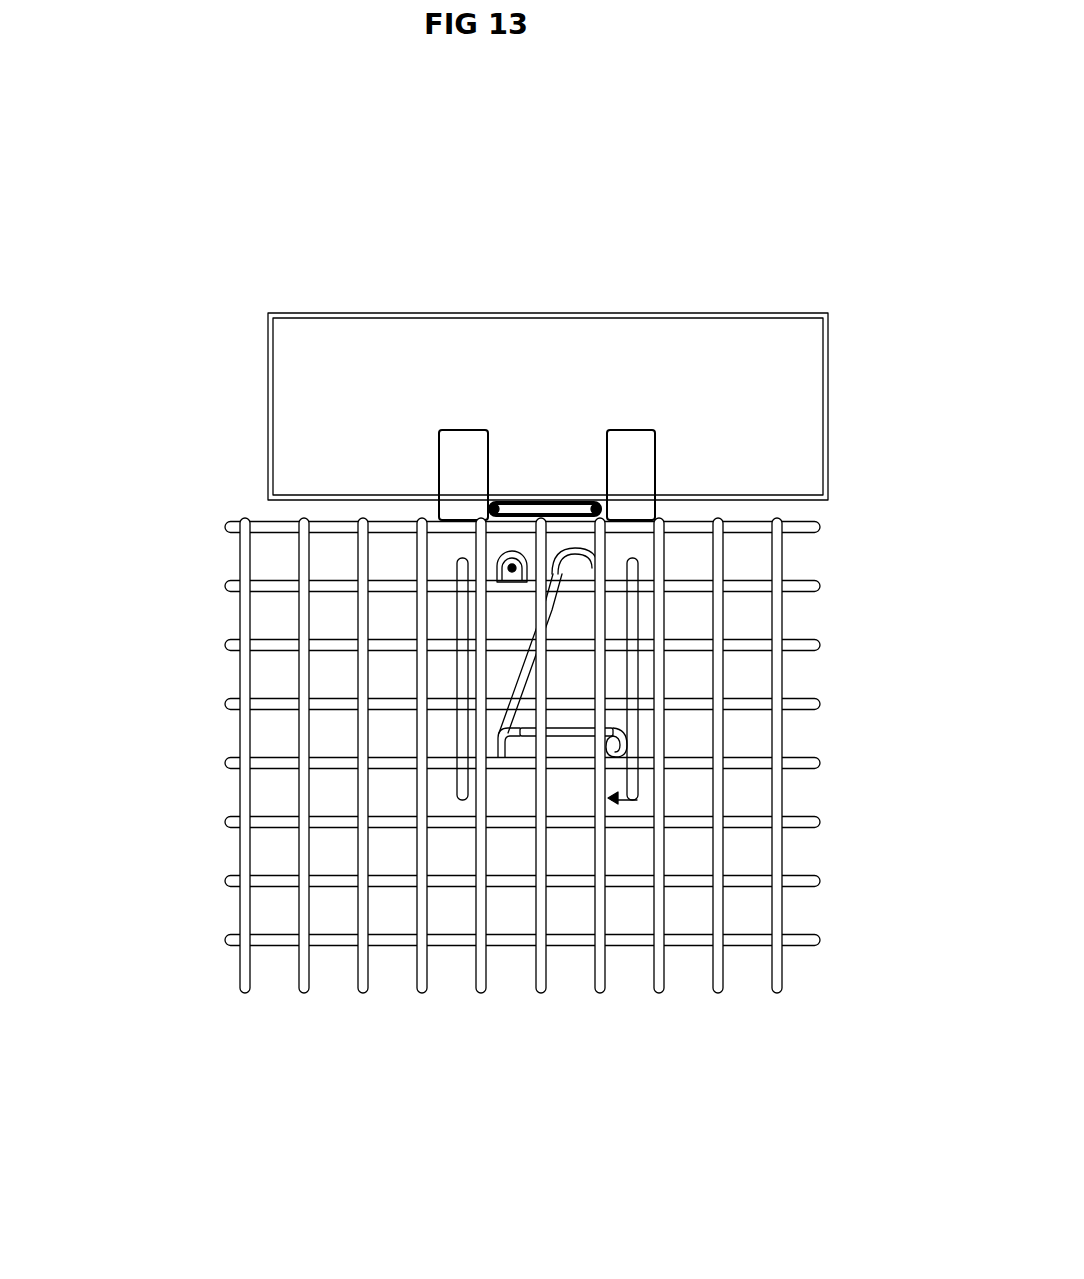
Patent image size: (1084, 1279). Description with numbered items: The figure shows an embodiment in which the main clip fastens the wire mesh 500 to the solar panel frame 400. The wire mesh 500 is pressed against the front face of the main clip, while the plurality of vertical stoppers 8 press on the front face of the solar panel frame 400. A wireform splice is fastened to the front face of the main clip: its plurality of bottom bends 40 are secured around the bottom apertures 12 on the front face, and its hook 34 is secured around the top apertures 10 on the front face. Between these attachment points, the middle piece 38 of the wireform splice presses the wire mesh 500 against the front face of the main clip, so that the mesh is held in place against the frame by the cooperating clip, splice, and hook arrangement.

The vertical stoppers 8 is at (642, 422).
The top apertures 10 is at (711, 563).
The bottom apertures 12 is at (540, 768).
The hook 34 is at (503, 563).
The middle piece 38 is at (512, 665).
The bottom bends 40 is at (495, 745).
The solar panel frame 400 is at (283, 290).
The wire mesh 500 is at (237, 1022).